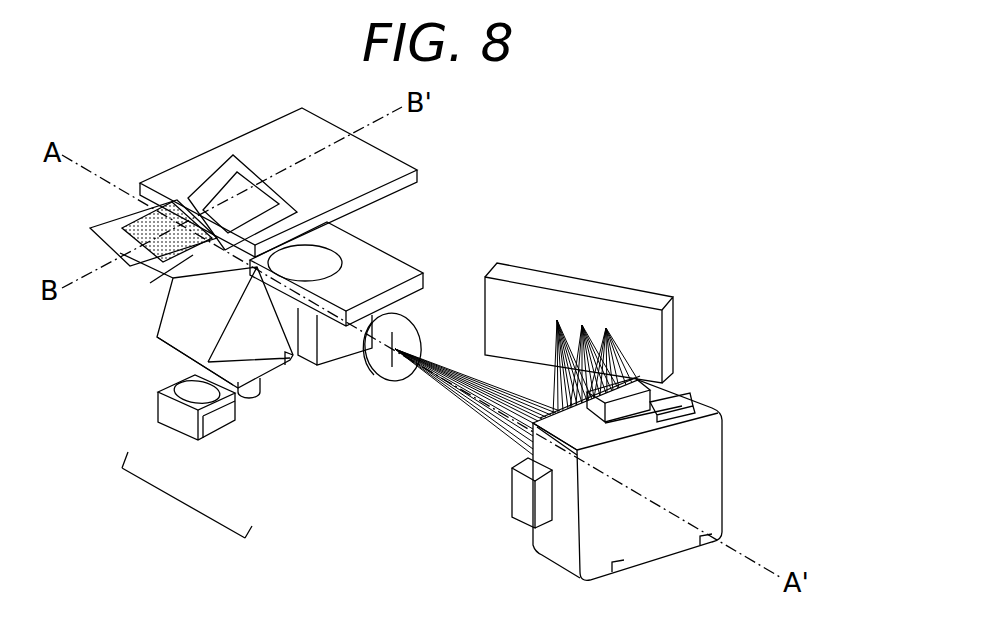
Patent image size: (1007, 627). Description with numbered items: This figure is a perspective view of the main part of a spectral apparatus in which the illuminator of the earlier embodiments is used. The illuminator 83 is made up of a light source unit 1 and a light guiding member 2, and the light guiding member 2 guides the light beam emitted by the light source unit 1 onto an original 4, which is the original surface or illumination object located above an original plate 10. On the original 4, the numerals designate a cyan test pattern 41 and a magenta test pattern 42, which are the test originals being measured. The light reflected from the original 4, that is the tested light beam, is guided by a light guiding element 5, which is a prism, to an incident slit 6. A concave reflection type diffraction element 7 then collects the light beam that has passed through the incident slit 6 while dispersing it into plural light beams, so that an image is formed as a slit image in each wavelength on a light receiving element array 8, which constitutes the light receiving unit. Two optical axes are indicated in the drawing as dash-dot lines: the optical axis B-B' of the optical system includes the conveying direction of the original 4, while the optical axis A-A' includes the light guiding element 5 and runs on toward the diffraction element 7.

The light source unit 1 is at (182, 413).
The light guiding member 2 is at (252, 355).
The original 4 is at (210, 158).
The cyan test pattern 41 is at (204, 188).
The magenta test pattern 42 is at (127, 208).
The light guiding element 5 is at (368, 250).
The incident slit 6 is at (373, 380).
The concave reflection type diffraction element 7 is at (598, 533).
The light receiving element array 8 is at (633, 293).
The original plate 10 is at (418, 174).
The illuminator 83 is at (187, 495).